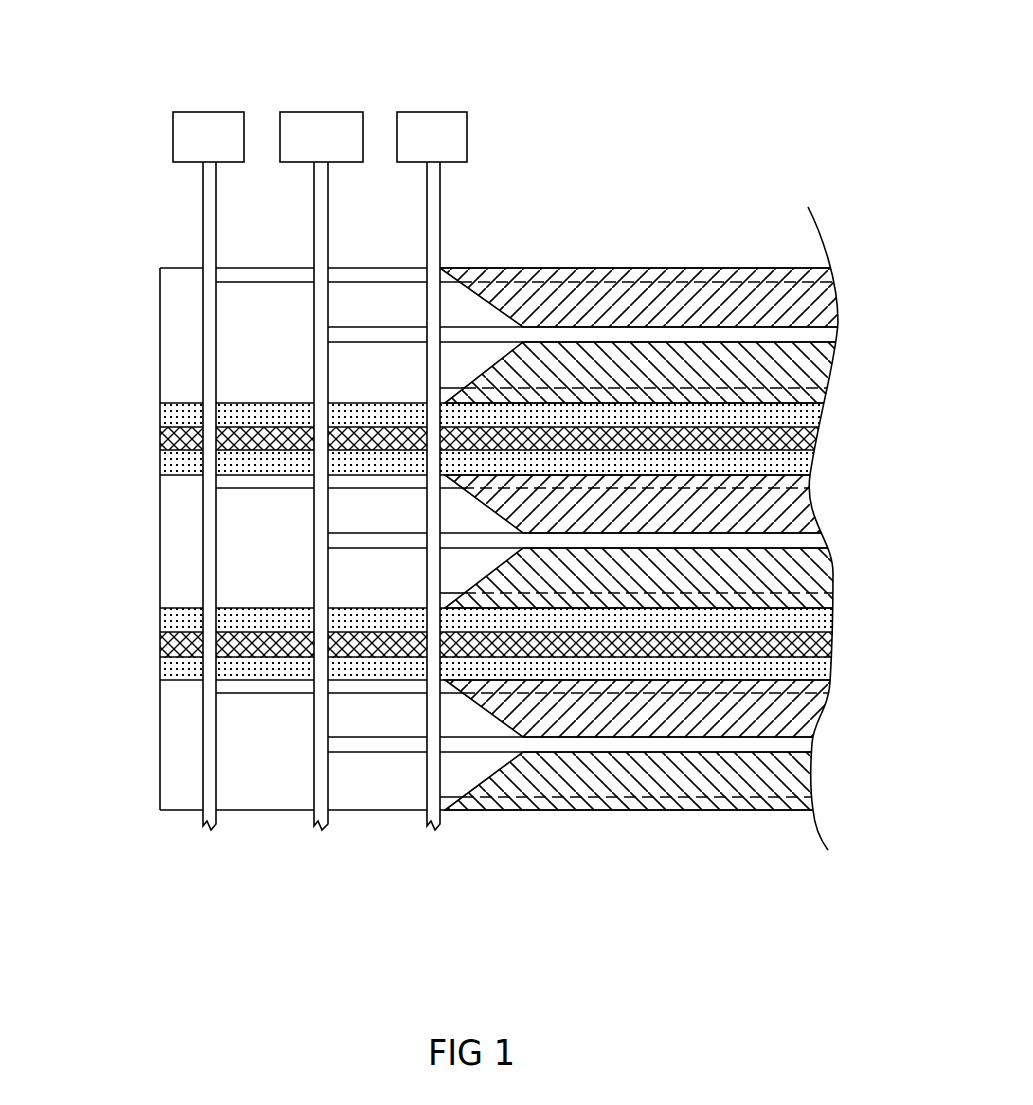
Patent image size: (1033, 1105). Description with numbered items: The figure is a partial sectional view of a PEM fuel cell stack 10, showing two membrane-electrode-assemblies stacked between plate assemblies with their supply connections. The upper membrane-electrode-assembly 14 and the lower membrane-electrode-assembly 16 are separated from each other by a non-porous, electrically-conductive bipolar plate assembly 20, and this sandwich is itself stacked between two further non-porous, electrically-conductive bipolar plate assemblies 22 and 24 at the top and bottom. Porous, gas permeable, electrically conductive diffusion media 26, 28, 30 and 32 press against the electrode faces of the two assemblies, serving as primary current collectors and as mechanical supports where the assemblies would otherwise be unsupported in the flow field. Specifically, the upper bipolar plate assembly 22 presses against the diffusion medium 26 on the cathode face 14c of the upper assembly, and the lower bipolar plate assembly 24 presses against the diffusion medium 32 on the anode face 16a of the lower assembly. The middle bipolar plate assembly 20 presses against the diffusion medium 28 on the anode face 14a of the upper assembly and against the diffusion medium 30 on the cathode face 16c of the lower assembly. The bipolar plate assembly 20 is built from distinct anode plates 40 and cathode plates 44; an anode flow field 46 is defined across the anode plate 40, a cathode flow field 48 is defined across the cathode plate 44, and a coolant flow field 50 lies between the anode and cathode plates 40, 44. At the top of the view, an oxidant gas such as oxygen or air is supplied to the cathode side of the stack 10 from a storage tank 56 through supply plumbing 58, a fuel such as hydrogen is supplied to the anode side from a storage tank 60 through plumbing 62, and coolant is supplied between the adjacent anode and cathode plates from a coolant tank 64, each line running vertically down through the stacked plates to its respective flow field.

The PEM fuel cell stack 10 is at (742, 96).
The membrane-electrode-assembly 14 is at (160, 438).
The anode face of MEA 14 14a is at (796, 465).
The cathode face of MEA 14 14c is at (795, 416).
The membrane-electrode-assembly 16 is at (160, 642).
The anode face of MEA 16 16a is at (799, 662).
The cathode face of MEA 16 16c is at (799, 617).
The bipolar plate assembly 20 is at (492, 543).
The bipolar plate assembly 22 is at (157, 340).
The bipolar plate assembly 24 is at (157, 749).
The diffusion medium 26 is at (165, 418).
The diffusion medium 28 is at (165, 462).
The diffusion medium 30 is at (165, 621).
The diffusion medium 32 is at (165, 666).
The anode plate 40 is at (803, 522).
The cathode plate 44 is at (822, 562).
The anode flow field 46 is at (818, 478).
The cathode flow field 48 is at (845, 602).
The coolant flow field 50 is at (832, 538).
The storage tank 56 is at (439, 117).
The supply plumbing 58 is at (435, 227).
The storage tank 60 is at (191, 117).
The plumbing 62 is at (210, 223).
The coolant tank 64 is at (322, 117).